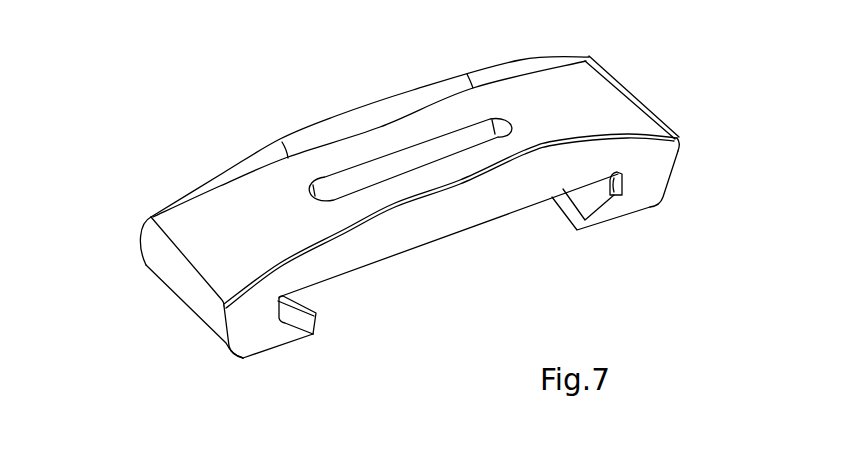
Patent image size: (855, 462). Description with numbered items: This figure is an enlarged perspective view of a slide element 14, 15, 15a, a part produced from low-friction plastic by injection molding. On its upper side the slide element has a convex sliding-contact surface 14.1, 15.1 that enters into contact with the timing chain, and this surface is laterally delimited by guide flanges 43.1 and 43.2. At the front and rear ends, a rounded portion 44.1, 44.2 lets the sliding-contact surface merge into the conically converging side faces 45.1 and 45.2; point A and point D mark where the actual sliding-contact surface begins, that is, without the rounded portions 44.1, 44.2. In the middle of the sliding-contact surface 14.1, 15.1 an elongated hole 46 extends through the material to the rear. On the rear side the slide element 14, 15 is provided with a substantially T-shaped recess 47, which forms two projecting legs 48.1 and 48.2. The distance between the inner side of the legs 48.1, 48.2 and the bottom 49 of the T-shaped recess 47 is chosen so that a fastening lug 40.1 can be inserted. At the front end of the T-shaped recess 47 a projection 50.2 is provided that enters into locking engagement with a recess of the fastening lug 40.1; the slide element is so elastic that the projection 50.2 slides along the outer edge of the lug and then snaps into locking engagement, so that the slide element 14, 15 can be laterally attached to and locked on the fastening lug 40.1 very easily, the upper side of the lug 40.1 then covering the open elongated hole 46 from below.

The slide element 14 is at (370, 137).
The slide element 15 is at (370, 137).
The holder part 15a is at (222, 165).
The sliding-contact surface 14.1 is at (624, 74).
The sliding-contact surface 15.1 is at (607, 114).
The point D is at (654, 136).
The point A is at (232, 301).
The guide flange 43.1 is at (345, 231).
The guide flange 43.2 is at (340, 126).
The rounded portion 44.1 is at (219, 301).
The rounded portion 44.2 is at (685, 136).
The side face 45.1 is at (168, 271).
The side face 45.2 is at (671, 176).
The elongated hole 46 is at (427, 150).
The T-shaped recess 47 is at (480, 283).
The projecting leg 48.1 is at (315, 330).
The projecting leg 48.2 is at (593, 216).
The bottom of the T-shaped recess 49 is at (513, 217).
The fastening lug 40.1 is at (286, 324).
The projection 50.2 is at (626, 183).